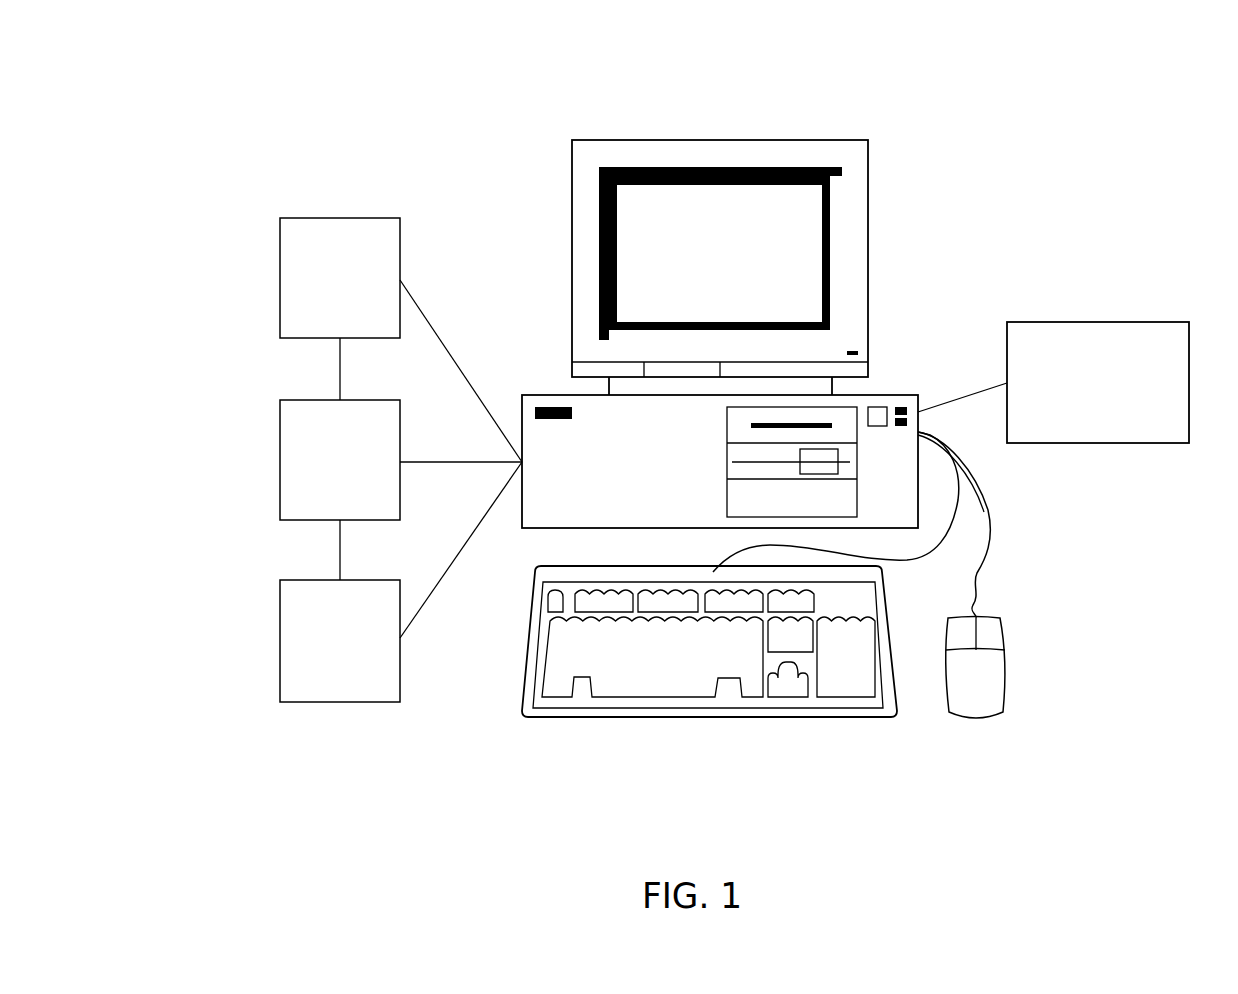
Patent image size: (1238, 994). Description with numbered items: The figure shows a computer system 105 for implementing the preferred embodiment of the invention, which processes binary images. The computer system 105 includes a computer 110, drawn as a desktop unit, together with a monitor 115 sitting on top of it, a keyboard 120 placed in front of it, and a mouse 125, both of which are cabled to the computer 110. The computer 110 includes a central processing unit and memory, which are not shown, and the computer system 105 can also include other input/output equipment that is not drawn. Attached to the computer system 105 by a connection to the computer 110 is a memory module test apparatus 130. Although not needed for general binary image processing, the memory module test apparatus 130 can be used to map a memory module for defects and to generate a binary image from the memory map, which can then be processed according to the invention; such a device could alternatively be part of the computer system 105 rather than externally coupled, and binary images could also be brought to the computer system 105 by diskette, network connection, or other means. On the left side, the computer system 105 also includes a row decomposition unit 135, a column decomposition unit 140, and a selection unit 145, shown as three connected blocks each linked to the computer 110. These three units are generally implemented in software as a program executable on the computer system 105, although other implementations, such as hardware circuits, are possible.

The computer system 105 is at (512, 56).
The computer 110 is at (870, 394).
The monitor 115 is at (693, 140).
The keyboard 120 is at (640, 717).
The mouse 125 is at (1005, 668).
The memory module test apparatus 130 is at (1127, 322).
The row decomposition unit 135 is at (280, 255).
The column decomposition unit 140 is at (280, 618).
The selection unit 145 is at (280, 436).